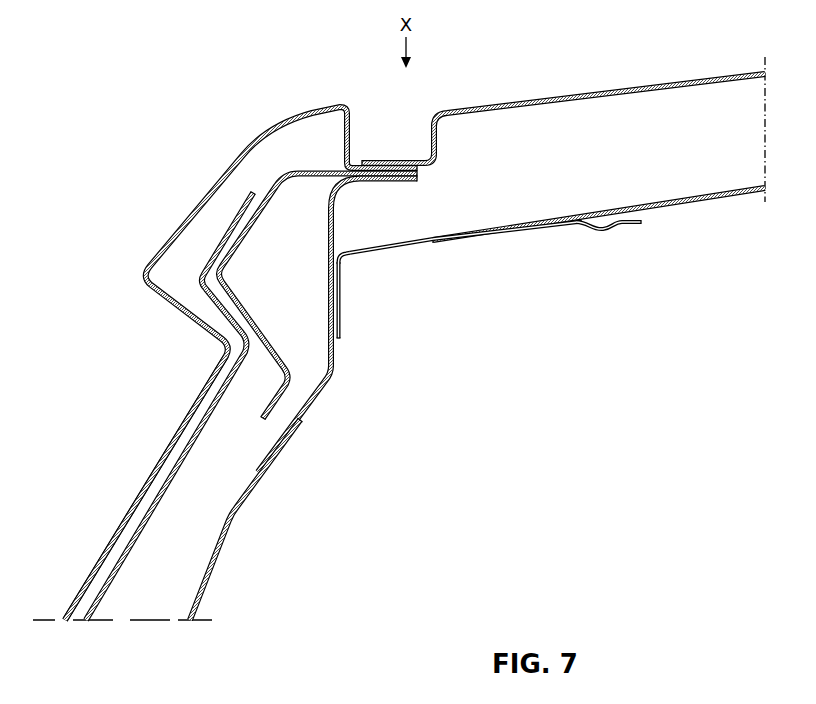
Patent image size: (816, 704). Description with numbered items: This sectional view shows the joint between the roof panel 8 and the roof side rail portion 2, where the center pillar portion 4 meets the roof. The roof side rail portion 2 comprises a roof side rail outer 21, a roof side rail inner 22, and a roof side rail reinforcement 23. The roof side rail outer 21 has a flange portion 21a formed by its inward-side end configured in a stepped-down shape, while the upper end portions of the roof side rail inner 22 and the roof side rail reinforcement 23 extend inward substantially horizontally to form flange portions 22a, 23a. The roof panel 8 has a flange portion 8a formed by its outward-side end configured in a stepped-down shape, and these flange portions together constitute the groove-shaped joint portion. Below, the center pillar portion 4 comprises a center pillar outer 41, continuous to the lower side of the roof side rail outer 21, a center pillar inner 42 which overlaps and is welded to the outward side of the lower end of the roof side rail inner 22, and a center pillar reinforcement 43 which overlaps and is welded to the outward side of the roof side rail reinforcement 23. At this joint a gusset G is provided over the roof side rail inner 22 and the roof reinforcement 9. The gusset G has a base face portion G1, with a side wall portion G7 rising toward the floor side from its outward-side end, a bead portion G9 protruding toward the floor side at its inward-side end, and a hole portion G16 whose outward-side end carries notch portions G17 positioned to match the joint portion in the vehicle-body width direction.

The roof side rail portion 2 is at (256, 120).
The roof side rail outer 21 is at (241, 338).
The flange portion 21a is at (370, 160).
The roof side rail inner 22 is at (337, 324).
The flange portion 22a is at (378, 182).
The roof side rail reinforcement 23 is at (304, 250).
The flange portion 23a is at (388, 163).
The roof panel 8 is at (563, 111).
The flange portion 8a is at (403, 160).
The roof reinforcement 9 is at (745, 206).
The gusset G is at (493, 283).
The base face portion G1 is at (531, 230).
The side wall portion G7 is at (341, 321).
The bead portion G9 is at (621, 230).
The hole portion G16 is at (413, 247).
The notch portion G17 is at (366, 256).
The center pillar portion 4 is at (86, 552).
The center pillar outer 41 is at (156, 470).
The center pillar inner 42 is at (228, 538).
The center pillar reinforcement 43 is at (192, 440).